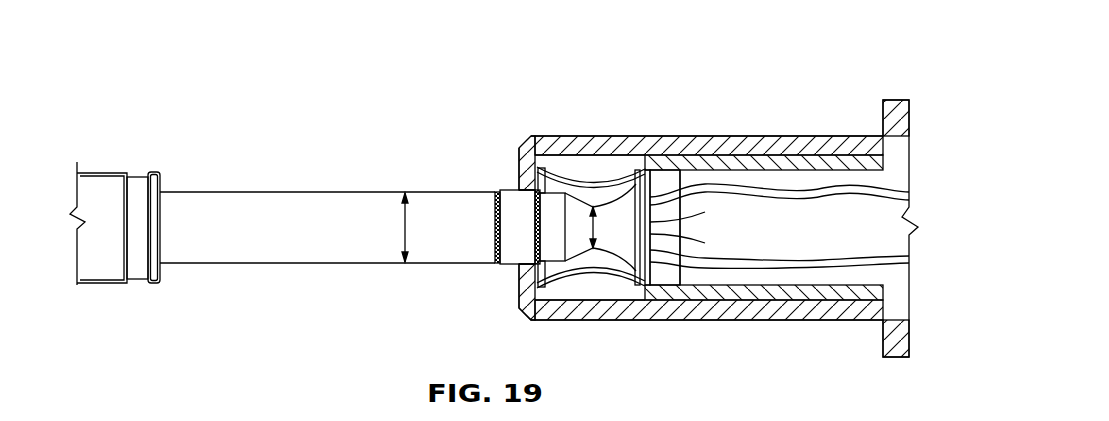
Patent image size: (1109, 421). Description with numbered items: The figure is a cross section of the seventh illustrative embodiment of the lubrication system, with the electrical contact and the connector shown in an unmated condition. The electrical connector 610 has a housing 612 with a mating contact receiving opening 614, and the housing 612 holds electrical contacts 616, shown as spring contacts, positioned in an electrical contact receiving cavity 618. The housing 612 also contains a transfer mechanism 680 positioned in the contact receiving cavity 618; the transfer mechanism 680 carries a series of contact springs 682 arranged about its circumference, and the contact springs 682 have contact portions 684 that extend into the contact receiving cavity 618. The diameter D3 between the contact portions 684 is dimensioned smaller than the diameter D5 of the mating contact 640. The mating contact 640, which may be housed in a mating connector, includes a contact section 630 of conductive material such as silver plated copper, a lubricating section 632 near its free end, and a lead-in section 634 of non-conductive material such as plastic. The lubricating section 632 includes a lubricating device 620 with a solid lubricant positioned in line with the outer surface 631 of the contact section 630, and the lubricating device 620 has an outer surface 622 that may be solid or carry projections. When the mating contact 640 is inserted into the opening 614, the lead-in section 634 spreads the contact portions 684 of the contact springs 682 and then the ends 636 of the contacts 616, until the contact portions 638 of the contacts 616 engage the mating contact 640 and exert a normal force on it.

The electrical connector 610 is at (775, 58).
The housing 612 is at (805, 136).
The mating contact receiving opening 614 is at (525, 187).
The electrical contacts 616 is at (893, 195).
The electrical contact receiving cavities 618 is at (727, 272).
The lubricating device 620 is at (517, 257).
The outer surface 622 is at (497, 212).
The contact section 630 is at (347, 252).
The outer surface 631 is at (218, 250).
The lubricating section 632 is at (513, 245).
The lead-in section 634 is at (690, 180).
The ends 636 is at (740, 165).
The contact portions 638 is at (700, 228).
The mating contact 640 is at (323, 148).
The transfer mechanism 680 is at (593, 182).
The contact springs 682 is at (549, 165).
The contact portions 684 is at (607, 174).
The diameter D3 is at (642, 280).
The diameter D5 is at (404, 248).